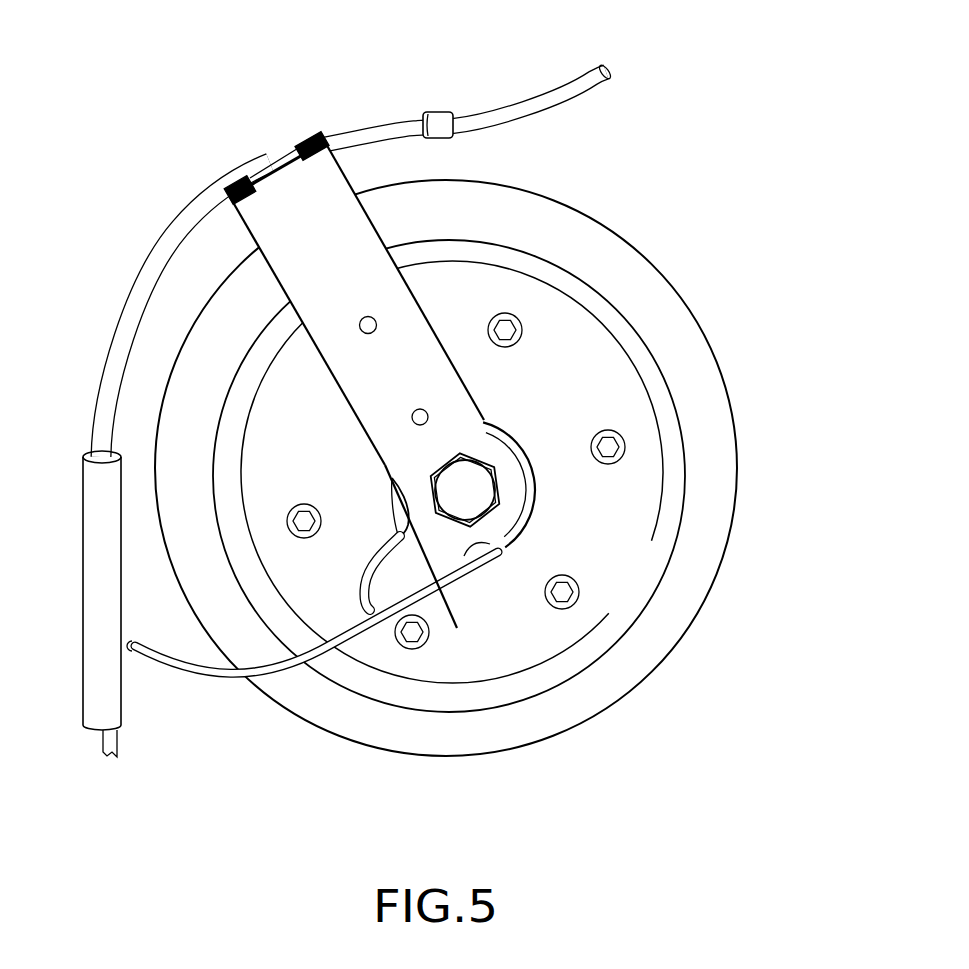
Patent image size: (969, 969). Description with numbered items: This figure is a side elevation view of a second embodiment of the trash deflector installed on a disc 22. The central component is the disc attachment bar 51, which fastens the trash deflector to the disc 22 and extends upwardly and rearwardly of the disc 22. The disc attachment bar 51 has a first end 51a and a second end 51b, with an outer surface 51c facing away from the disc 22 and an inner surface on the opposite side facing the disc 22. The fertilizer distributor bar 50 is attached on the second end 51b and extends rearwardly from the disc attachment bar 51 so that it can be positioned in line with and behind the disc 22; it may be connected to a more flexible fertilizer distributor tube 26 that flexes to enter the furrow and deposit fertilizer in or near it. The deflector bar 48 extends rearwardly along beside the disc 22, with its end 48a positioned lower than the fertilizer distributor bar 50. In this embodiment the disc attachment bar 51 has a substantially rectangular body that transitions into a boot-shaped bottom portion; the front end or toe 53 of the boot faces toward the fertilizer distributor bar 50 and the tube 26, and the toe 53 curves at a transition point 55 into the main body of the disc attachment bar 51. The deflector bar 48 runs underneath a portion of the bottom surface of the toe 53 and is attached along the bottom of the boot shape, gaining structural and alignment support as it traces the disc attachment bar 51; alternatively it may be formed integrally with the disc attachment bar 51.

The disc 22 is at (645, 675).
The fertilizer distributor tube 26 is at (113, 687).
The deflector bar 48 is at (273, 668).
The end of the deflector bar 48a is at (138, 648).
The fertilizer distributor bar 50 is at (128, 302).
The disc attachment bar 51 is at (440, 372).
The first end of the disc attachment bar 51a is at (497, 535).
The second end of the disc attachment bar 51b is at (288, 177).
The outer surface of the disc attachment bar 51c is at (298, 248).
The toe 53 is at (383, 593).
The transition point 55 is at (457, 628).